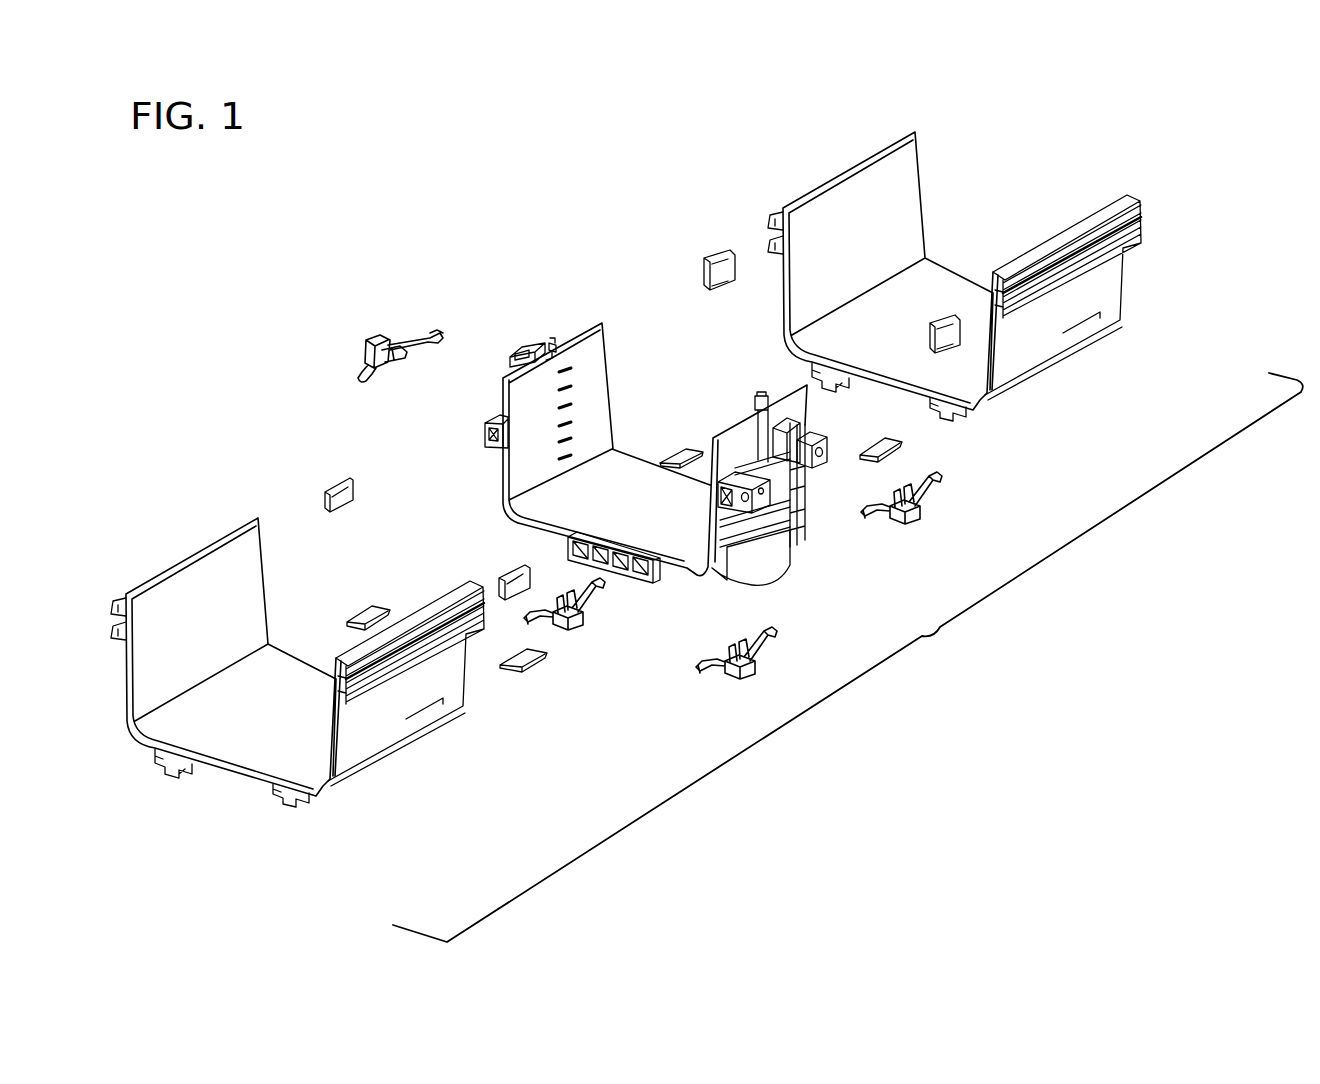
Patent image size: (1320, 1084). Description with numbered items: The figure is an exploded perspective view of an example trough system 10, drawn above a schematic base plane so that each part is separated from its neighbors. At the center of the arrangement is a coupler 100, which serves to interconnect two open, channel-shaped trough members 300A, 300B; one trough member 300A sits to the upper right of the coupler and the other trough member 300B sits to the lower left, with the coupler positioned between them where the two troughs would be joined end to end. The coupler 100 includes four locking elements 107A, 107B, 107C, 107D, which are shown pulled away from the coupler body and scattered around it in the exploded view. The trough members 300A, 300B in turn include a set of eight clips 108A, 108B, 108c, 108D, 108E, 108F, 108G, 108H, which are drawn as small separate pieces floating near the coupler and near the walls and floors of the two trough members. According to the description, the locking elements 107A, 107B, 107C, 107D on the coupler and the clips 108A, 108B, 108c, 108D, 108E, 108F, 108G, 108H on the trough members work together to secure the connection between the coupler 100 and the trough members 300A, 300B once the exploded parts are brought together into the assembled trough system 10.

The trough system 10 is at (848, 657).
The coupler 100 is at (535, 303).
The trough member 300A is at (1025, 172).
The trough member 300B is at (136, 553).
The locking element 107A is at (940, 498).
The locking element 107B is at (755, 675).
The locking element 107C is at (548, 628).
The locking element 107D is at (377, 340).
The clip 108A is at (715, 253).
The clip 108B is at (683, 445).
The clip 108c is at (903, 445).
The clip 108D is at (952, 318).
The clip 108E is at (338, 490).
The clip 108F is at (348, 615).
The clip 108G is at (522, 672).
The clip 108H is at (505, 570).